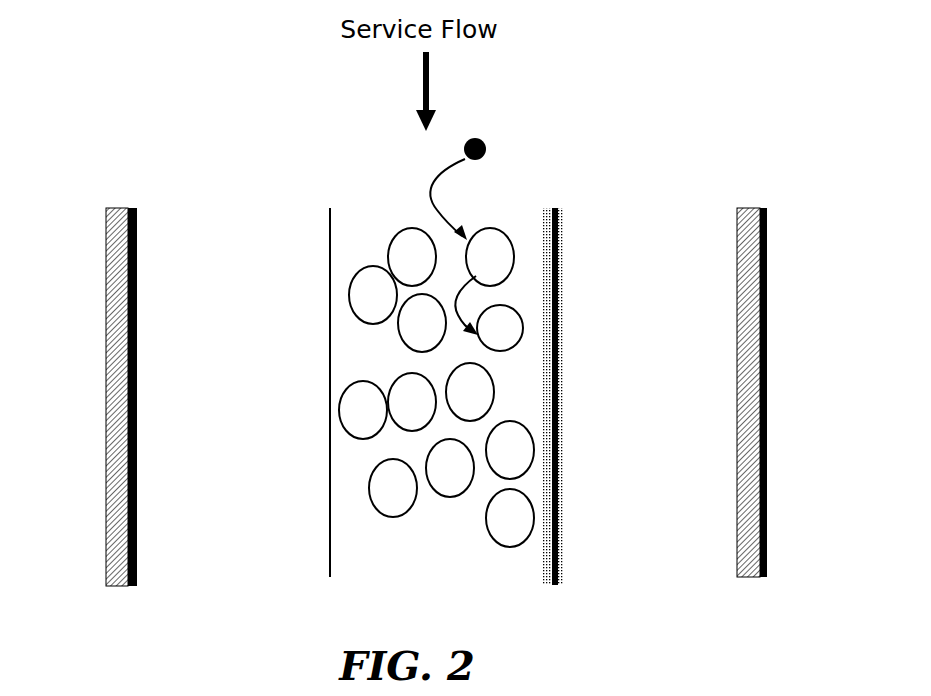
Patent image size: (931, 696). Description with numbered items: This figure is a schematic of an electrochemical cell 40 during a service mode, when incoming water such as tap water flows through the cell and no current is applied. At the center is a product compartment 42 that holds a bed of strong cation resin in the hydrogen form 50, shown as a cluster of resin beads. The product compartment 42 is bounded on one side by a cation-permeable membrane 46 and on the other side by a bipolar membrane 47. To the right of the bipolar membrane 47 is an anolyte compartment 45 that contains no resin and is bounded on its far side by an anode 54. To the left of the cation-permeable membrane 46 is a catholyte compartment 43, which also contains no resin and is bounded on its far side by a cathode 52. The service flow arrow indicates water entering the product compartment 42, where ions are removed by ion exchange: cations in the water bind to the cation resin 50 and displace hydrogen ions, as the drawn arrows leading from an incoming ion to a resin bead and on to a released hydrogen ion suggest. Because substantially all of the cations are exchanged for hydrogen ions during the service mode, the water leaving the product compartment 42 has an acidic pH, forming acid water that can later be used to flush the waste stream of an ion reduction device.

The electrochemical cell 40 is at (92, 268).
The product compartment 42 is at (377, 223).
The catholyte compartment 43 is at (223, 223).
The anolyte compartment 45 is at (643, 223).
The cation-permeable membrane 46 is at (330, 273).
The bipolar membrane 47 is at (563, 282).
The bed of strong cation resin in the hydrogen form 50 is at (490, 236).
The cathode 52 is at (105, 438).
The anode 54 is at (767, 355).